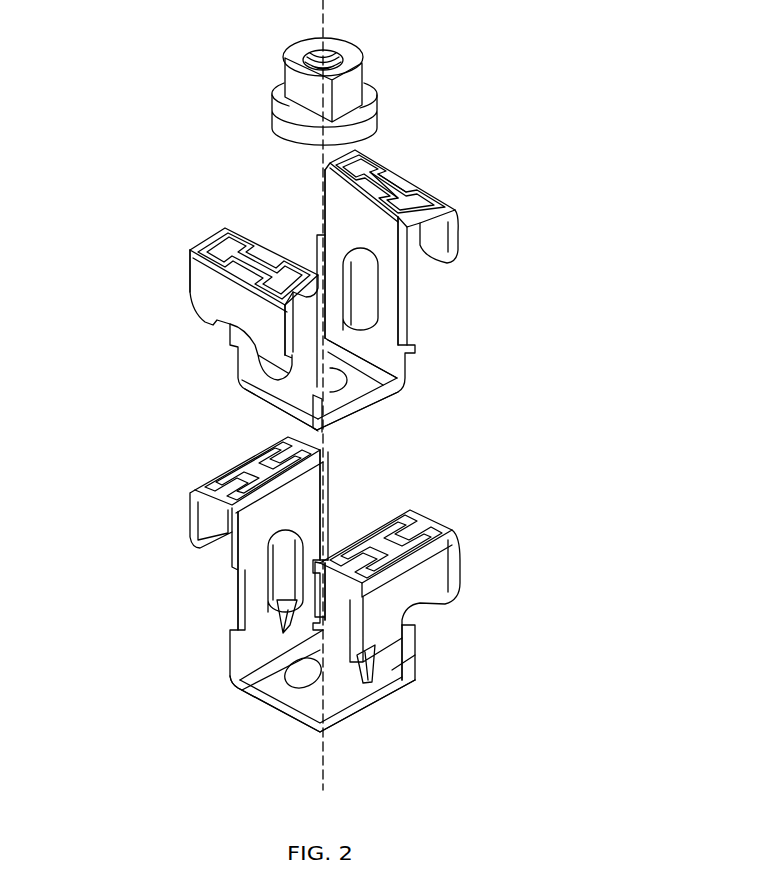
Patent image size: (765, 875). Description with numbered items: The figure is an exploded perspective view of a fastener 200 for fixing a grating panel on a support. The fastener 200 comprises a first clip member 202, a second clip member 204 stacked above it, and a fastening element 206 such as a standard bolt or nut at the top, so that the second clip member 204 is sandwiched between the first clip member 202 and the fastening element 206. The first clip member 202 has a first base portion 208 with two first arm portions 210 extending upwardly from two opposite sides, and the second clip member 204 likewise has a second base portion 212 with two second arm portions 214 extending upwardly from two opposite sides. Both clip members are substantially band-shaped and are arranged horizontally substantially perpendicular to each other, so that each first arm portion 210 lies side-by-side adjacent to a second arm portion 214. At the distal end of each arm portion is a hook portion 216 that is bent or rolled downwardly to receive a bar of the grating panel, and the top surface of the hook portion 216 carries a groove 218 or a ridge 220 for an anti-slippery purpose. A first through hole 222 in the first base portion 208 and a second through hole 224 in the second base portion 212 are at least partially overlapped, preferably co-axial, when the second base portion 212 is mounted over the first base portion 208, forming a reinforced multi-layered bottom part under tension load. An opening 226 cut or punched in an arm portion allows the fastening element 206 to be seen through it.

The fastener 200 is at (120, 51).
The first clip member 202 is at (498, 720).
The second clip member 204 is at (517, 400).
The fastening element 206 is at (398, 52).
The first base portion 208 is at (250, 698).
The first arm portions 210 is at (228, 655).
The second base portion 212 is at (390, 387).
The second arm portions 214 is at (240, 376).
The hook portions 216 is at (457, 213).
The groove 218 is at (380, 166).
The ridge 220 is at (417, 182).
The first through hole 222 is at (308, 685).
The second through hole 224 is at (347, 385).
The opening 226 is at (358, 298).